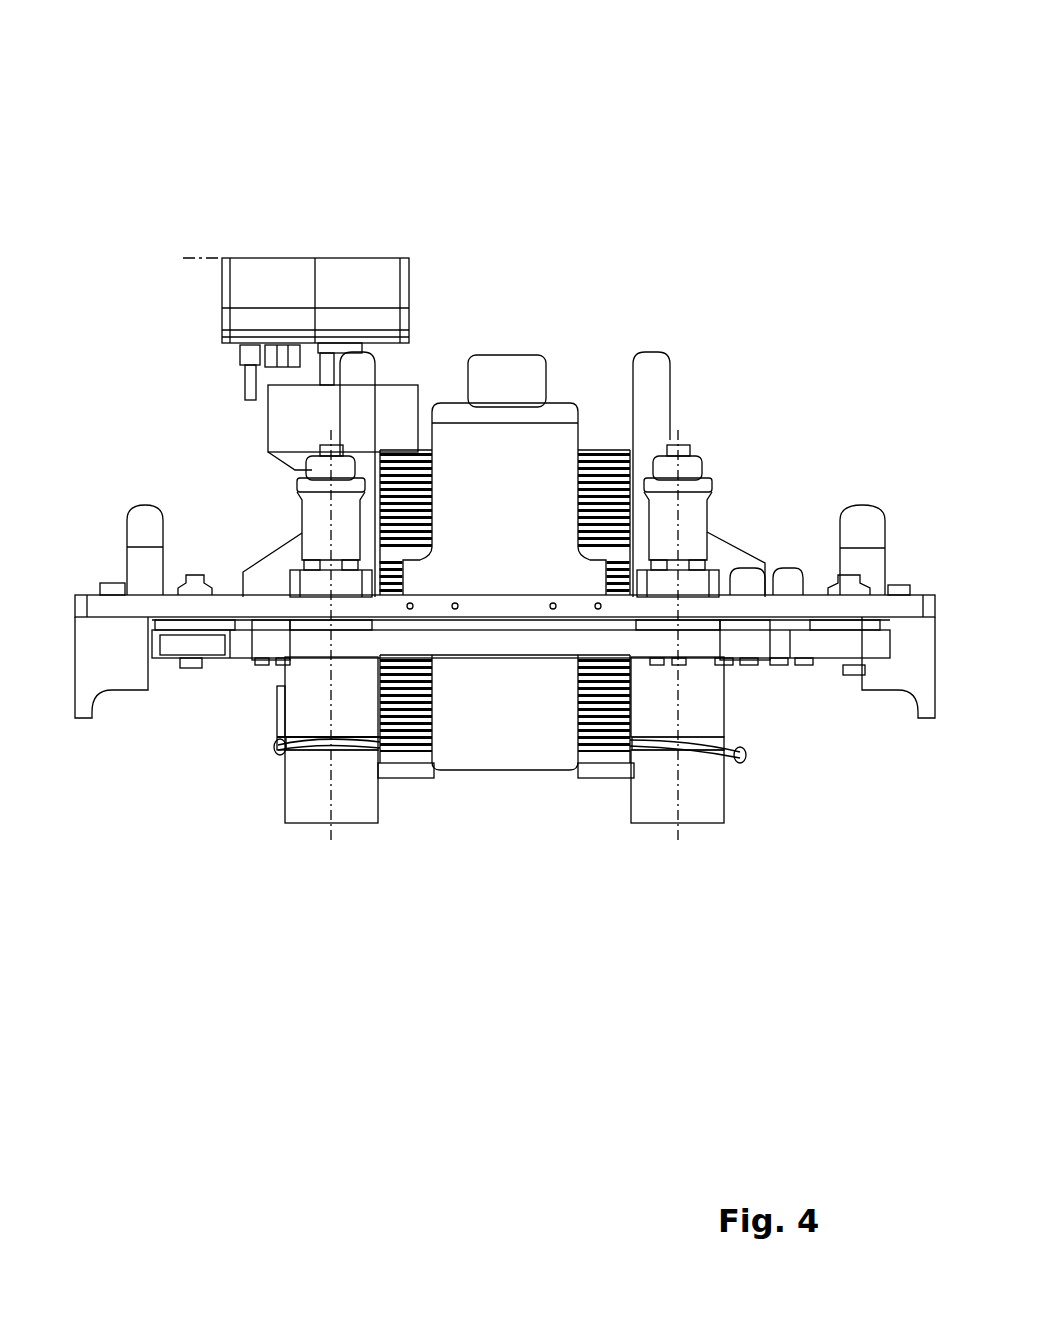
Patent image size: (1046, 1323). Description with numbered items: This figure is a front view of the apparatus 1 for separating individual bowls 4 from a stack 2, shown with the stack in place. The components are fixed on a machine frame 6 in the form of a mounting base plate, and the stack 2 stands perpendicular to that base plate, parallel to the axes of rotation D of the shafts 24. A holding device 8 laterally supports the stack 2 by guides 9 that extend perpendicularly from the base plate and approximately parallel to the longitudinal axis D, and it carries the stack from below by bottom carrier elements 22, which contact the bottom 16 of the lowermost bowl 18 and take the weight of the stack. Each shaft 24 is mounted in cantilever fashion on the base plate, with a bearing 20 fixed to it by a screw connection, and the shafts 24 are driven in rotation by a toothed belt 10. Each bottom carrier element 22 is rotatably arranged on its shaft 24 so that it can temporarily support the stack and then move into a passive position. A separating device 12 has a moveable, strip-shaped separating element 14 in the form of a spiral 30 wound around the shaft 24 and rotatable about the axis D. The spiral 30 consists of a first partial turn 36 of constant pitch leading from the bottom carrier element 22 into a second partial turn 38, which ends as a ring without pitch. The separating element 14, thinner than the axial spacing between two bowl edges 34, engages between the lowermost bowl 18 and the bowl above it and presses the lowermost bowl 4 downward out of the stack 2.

The apparatus 1 is at (735, 106).
The stack 2 is at (600, 426).
The bowl 4 is at (611, 466).
The machine frame 6 is at (790, 605).
The holding device 8 is at (252, 860).
The guide 9 is at (358, 415).
The toothed belt 10 is at (790, 638).
The separating device 12 is at (276, 772).
The separating element 14 is at (280, 752).
The bottom 16 is at (447, 768).
The lowermost bowl 18 is at (625, 770).
The bearing 20 is at (310, 576).
The bottom carrier element 22 is at (415, 768).
The shaft 24 is at (320, 775).
The spiral 30 is at (254, 710).
The bowl edge 34 is at (411, 462).
The first partial turn 36 is at (278, 744).
The second partial turn 38 is at (276, 736).
The axis of rotation D is at (330, 520).